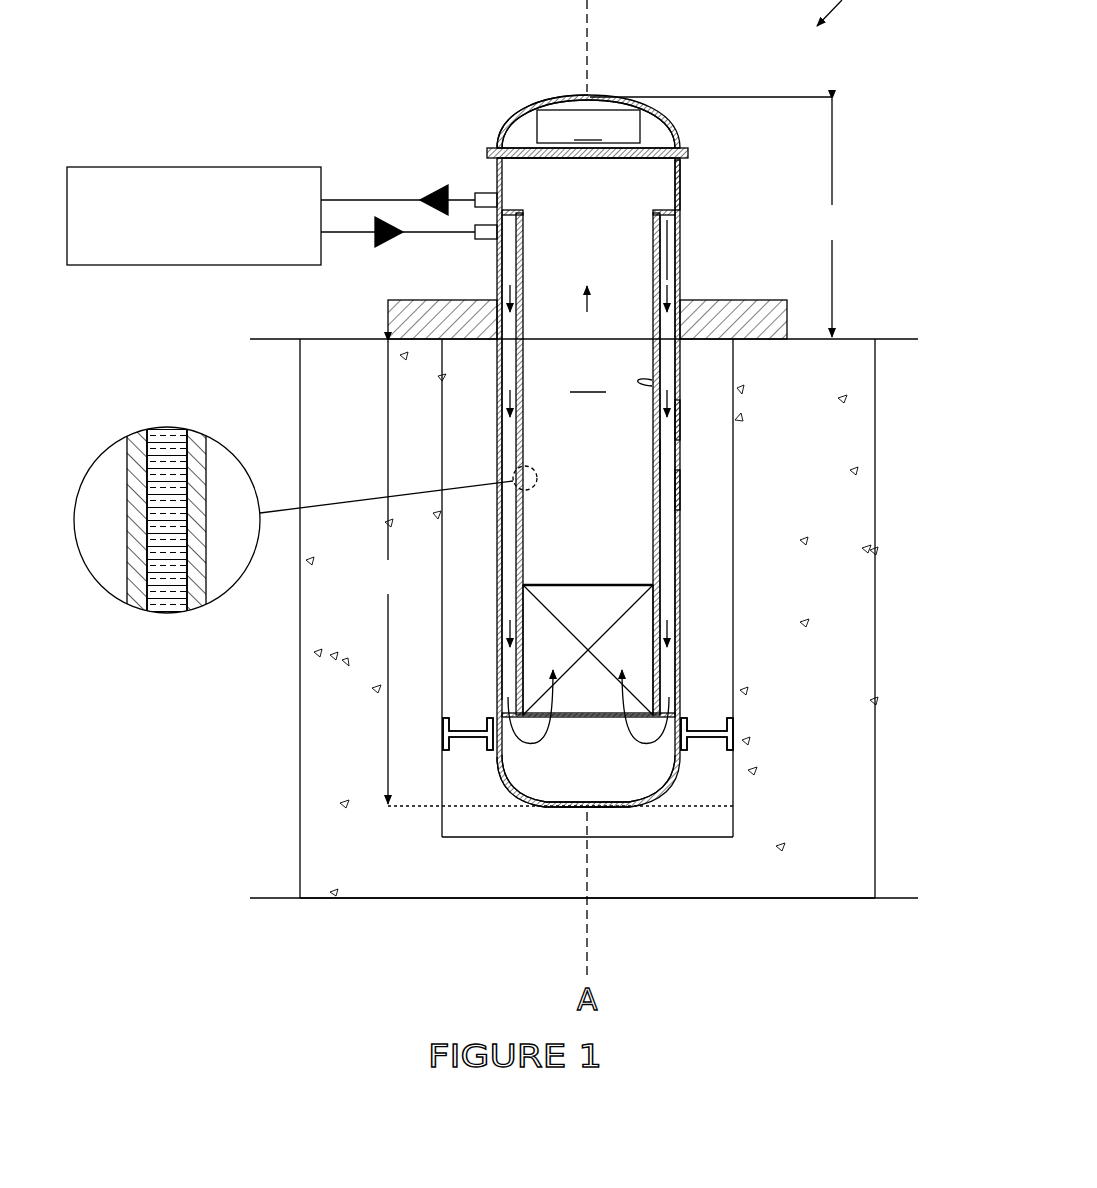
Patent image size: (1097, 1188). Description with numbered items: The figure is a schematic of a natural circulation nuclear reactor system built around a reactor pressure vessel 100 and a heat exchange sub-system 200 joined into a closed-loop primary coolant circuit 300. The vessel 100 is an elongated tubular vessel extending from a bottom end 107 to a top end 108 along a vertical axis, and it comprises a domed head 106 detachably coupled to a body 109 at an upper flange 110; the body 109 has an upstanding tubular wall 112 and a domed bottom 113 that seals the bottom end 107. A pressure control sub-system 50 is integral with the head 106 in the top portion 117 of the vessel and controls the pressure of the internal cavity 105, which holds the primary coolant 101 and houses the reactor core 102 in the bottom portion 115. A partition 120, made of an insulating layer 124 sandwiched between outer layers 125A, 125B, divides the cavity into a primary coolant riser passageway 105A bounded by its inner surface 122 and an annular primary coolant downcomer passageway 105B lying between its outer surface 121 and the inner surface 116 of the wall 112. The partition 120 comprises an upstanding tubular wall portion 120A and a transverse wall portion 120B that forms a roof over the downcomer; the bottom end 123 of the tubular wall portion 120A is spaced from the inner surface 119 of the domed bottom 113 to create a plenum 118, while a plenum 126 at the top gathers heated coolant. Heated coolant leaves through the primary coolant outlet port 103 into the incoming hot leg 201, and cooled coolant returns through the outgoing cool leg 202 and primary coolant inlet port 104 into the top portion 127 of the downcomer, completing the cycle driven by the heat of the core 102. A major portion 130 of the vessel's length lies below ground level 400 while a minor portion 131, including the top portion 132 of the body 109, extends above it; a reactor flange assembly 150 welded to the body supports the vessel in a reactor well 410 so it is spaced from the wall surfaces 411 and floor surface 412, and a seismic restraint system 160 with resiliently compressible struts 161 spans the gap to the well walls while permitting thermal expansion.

The pressure control sub-system 50 is at (588, 126).
The reactor pressure vessel 100 is at (683, 173).
The primary coolant 101 is at (633, 245).
The reactor core 102 is at (660, 660).
The primary coolant outlet port 103 is at (484, 192).
The primary coolant inlet port 104 is at (484, 240).
The internal cavity 105 is at (611, 381).
The primary coolant riser passageway 105A is at (656, 588).
The primary coolant downcomer passageway 105B is at (665, 553).
The domed head 106 is at (648, 124).
The bottom end 107 is at (572, 810).
The top end 108 is at (600, 96).
The body 109 is at (680, 418).
The upper flange 110 is at (635, 166).
The upstanding tubular wall 112 is at (680, 485).
The domed bottom 113 is at (660, 848).
The bottom portion 115 is at (660, 692).
The inner surface 116 is at (663, 620).
The top portion 117 is at (686, 150).
The plenum 118 is at (665, 758).
The inner surface 119 is at (522, 803).
The partition 120 is at (645, 378).
The upstanding tubular wall portion 120A is at (657, 273).
The transverse wall portion 120B is at (499, 143).
The outer surface 121 is at (661, 452).
The inner surface 122 is at (518, 683).
The bottom end 123 is at (740, 729).
The insulating layer 124 is at (168, 445).
The outer layer 125A is at (136, 600).
The outer layer 125B is at (197, 600).
The plenum 126 is at (512, 210).
The top portion 127 is at (519, 213).
The major portion 130 is at (550, 573).
The minor portion 131 is at (721, 217).
The top portion 132 is at (680, 211).
The reactor flange assembly 150 is at (430, 316).
The seismic restraint system 160 is at (469, 752).
The resiliently compressible struts 161 is at (468, 729).
The heat exchange sub-system 200 is at (178, 163).
The incoming hot leg 201 is at (355, 199).
The outgoing cool leg 202 is at (338, 231).
The closed-loop primary coolant circuit 300 is at (372, 196).
The ground level 400 is at (340, 336).
The reactor well 410 is at (705, 805).
The wall surfaces 411 is at (728, 508).
The floor surface 412 is at (447, 838).